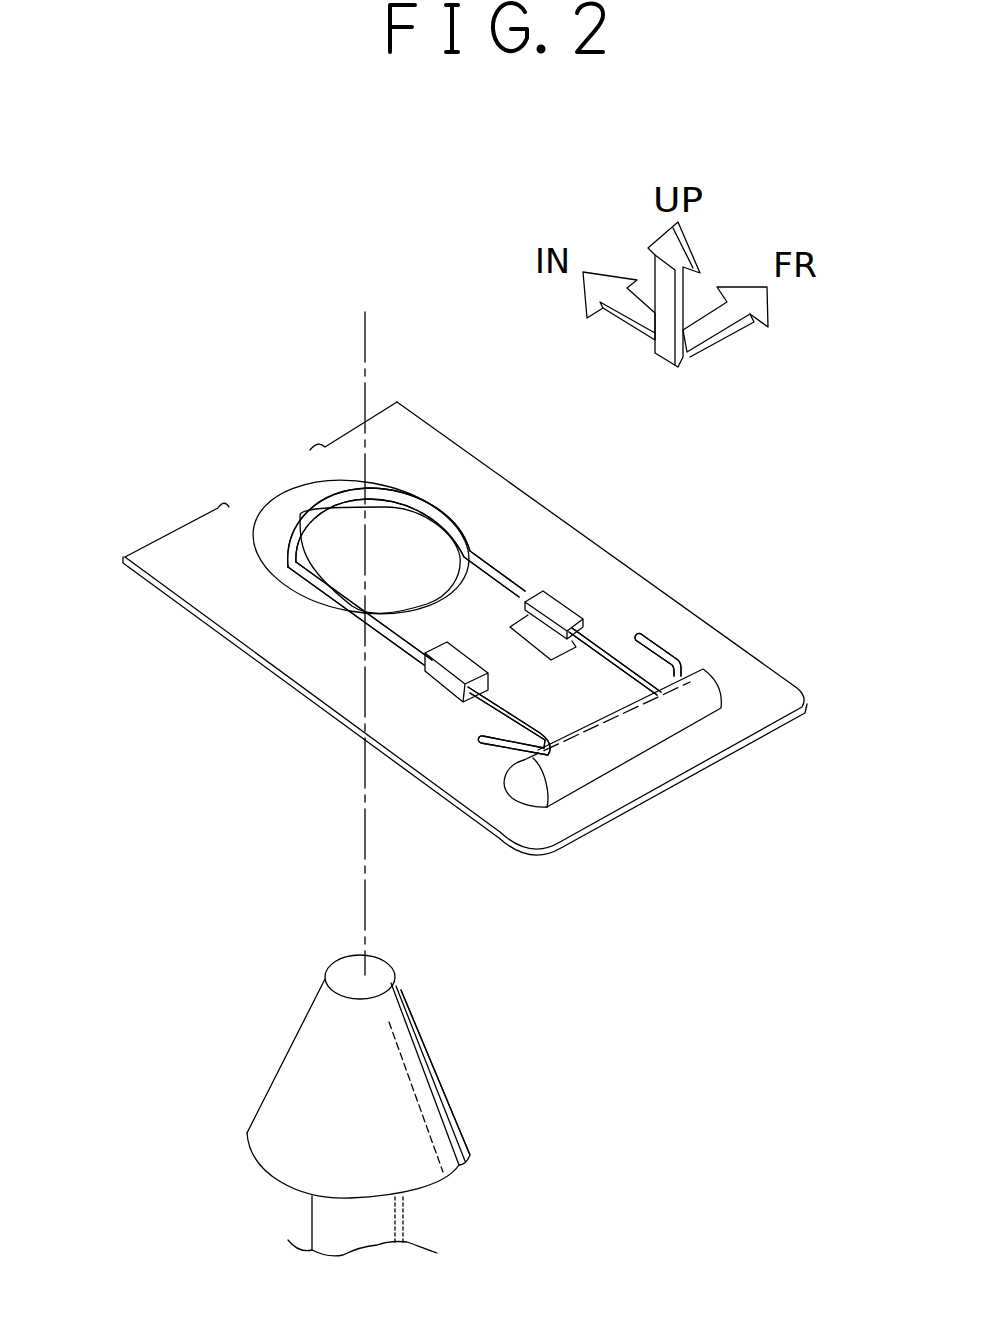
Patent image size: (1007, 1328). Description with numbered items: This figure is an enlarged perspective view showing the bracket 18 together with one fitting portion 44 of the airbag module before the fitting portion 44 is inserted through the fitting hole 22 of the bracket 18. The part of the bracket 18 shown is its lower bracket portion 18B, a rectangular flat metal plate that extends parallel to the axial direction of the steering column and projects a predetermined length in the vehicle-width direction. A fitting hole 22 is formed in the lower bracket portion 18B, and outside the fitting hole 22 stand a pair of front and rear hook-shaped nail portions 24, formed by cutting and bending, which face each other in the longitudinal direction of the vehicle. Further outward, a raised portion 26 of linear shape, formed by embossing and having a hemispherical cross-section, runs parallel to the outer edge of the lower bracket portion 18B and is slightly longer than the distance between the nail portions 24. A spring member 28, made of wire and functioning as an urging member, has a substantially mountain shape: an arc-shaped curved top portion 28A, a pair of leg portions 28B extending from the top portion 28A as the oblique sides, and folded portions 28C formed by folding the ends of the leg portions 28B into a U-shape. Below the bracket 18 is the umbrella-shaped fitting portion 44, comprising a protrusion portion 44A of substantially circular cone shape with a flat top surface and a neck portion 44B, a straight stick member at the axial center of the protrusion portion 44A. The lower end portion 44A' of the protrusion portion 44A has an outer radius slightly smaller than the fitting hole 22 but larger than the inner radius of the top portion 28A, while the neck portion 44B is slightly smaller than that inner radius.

The bracket 18 is at (543, 502).
The lower bracket portion 18B is at (574, 522).
The fitting hole 22 is at (273, 512).
The nail portion 24 is at (566, 610).
The raised portion 26 is at (625, 733).
The spring member 28 is at (358, 636).
The top portion 28A is at (395, 505).
The leg portion 28B is at (517, 577).
The folded portion 28C is at (660, 647).
The fitting portion 44 is at (256, 1090).
The protrusion portion 44A is at (480, 1074).
The lower end portion of the protrusion portion 44A' is at (496, 1097).
The neck portion 44B is at (398, 1224).